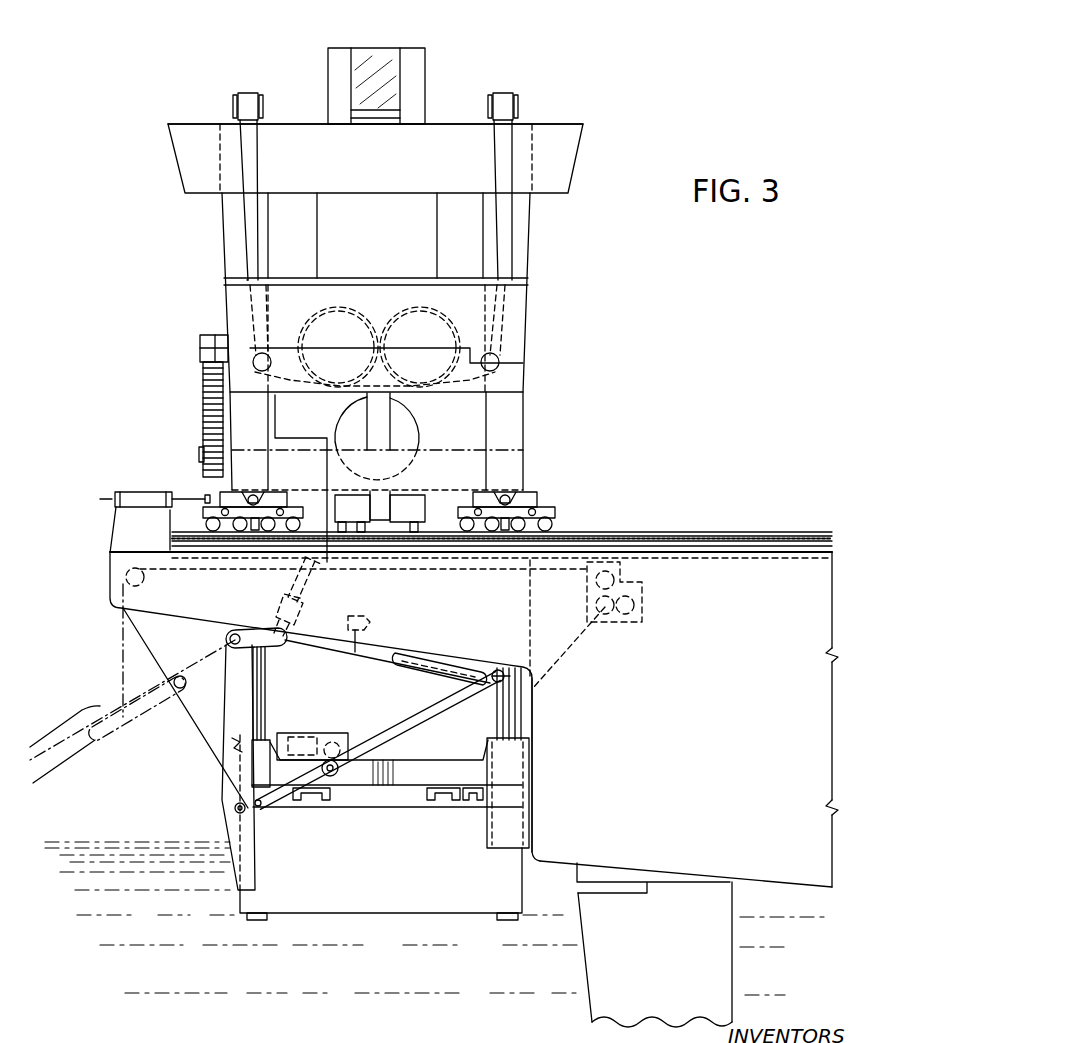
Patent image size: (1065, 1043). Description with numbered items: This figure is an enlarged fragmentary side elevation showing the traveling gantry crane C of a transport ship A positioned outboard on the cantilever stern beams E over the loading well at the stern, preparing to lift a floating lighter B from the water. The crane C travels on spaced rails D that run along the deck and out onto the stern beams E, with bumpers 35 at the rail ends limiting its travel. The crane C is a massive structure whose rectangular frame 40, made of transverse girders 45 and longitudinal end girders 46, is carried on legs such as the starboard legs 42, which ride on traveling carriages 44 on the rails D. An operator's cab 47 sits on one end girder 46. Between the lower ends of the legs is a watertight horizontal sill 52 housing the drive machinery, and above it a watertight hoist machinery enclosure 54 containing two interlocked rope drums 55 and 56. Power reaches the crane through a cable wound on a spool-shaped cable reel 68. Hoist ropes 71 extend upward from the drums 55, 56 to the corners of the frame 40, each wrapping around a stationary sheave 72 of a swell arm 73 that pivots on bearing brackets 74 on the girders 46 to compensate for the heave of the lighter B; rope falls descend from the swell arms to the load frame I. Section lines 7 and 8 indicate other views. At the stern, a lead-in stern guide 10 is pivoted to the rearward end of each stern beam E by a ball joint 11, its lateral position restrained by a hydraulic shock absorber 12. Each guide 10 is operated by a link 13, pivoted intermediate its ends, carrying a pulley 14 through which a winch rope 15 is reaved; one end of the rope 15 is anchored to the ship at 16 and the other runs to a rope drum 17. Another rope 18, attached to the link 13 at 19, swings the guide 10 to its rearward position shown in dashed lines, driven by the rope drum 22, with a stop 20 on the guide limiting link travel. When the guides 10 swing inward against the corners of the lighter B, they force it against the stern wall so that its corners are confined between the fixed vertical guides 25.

The transport ship A is at (748, 515).
The lighter B is at (400, 900).
The gantry crane C is at (555, 318).
The rails D is at (666, 533).
The cantilever stern beams E is at (108, 582).
The load frame I is at (437, 758).
The constant tension rope drum 7 is at (187, 85).
The section line 8- 8 is at (270, 395).
The stern guide 10 is at (226, 781).
The ball joint 11 is at (228, 638).
The hydraulic shock absorber 12 is at (318, 597).
The link 13 is at (312, 792).
The pulley 14 is at (338, 776).
The winch rope 15 is at (432, 722).
The rope connection point 16 is at (535, 676).
The rope drum 17 is at (605, 616).
The rope 18 is at (122, 640).
The rope connection on link 19 is at (259, 806).
The stop 20 is at (140, 698).
The rope drum 22 is at (593, 576).
The fixed vertical guide 25 is at (487, 832).
The bumper 35 is at (186, 494).
The rectangular frame 40 is at (442, 121).
The starboard leg 42 is at (222, 218).
The traveling carriage 44 is at (298, 491).
The transverse girder 45 is at (174, 163).
The end girder 46 is at (313, 134).
The operator's cab 47 is at (384, 49).
The horizontal sill 52 is at (440, 447).
The hoist machinery enclosure 54 is at (290, 284).
The rope drum 55 is at (323, 326).
The rope drum 56 is at (436, 321).
The cable reel 68 is at (343, 422).
The hoist rope 71 is at (259, 223).
The stationary sheave 72 is at (234, 98).
The swell arm 73 is at (247, 93).
The bearing bracket 74 is at (251, 125).